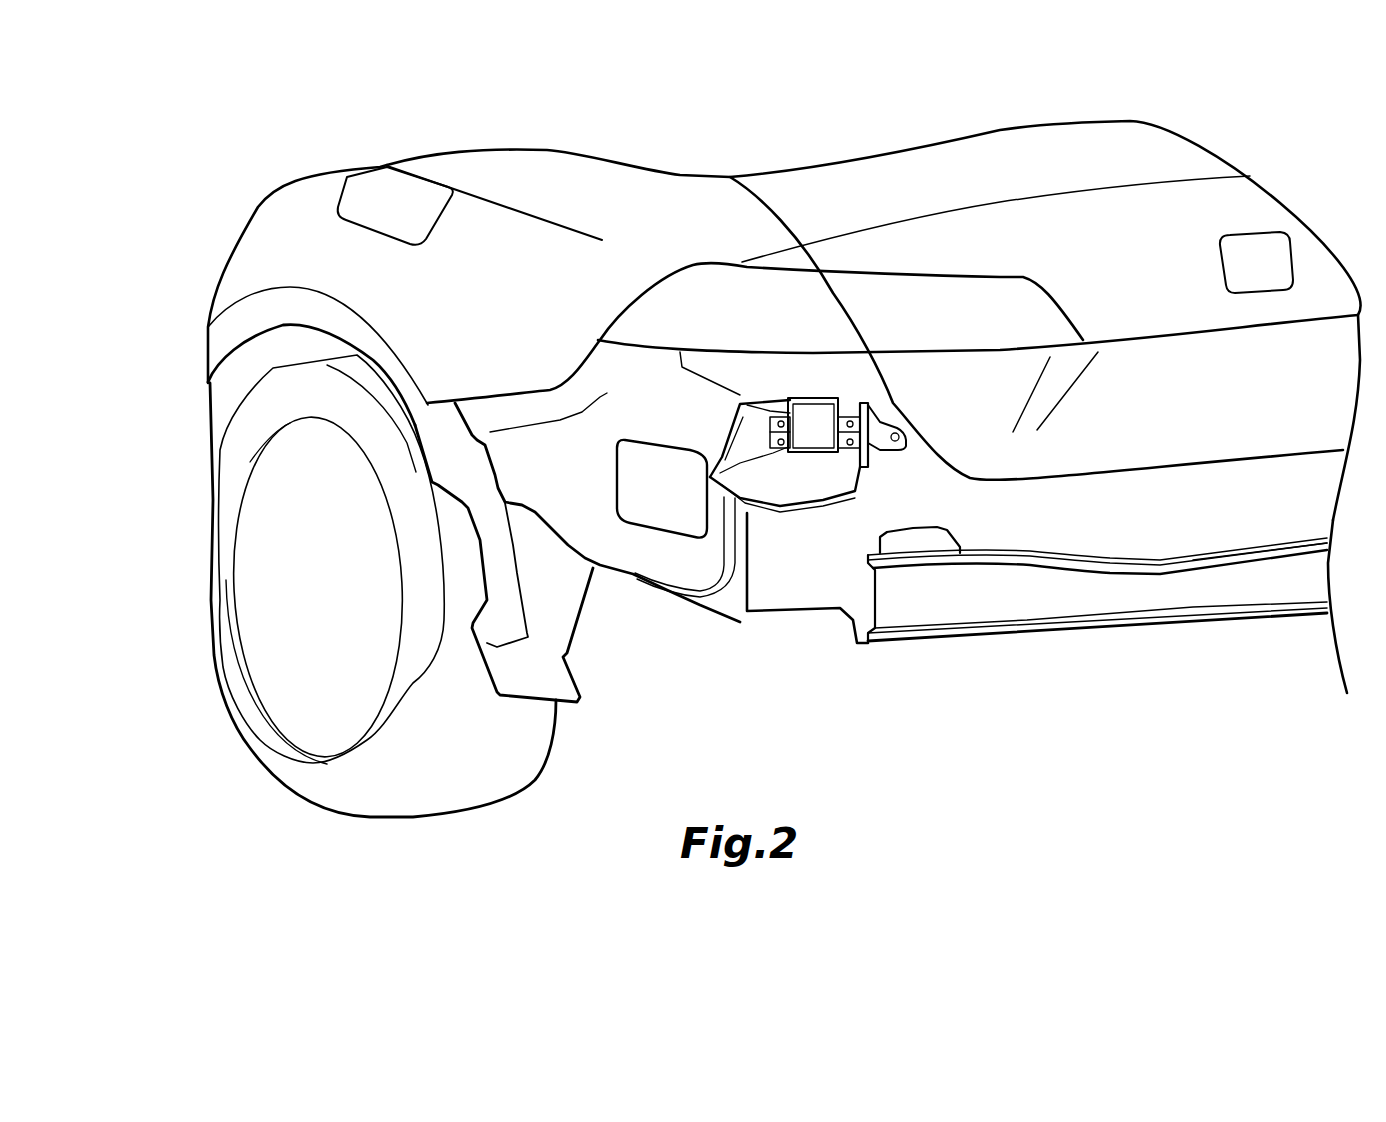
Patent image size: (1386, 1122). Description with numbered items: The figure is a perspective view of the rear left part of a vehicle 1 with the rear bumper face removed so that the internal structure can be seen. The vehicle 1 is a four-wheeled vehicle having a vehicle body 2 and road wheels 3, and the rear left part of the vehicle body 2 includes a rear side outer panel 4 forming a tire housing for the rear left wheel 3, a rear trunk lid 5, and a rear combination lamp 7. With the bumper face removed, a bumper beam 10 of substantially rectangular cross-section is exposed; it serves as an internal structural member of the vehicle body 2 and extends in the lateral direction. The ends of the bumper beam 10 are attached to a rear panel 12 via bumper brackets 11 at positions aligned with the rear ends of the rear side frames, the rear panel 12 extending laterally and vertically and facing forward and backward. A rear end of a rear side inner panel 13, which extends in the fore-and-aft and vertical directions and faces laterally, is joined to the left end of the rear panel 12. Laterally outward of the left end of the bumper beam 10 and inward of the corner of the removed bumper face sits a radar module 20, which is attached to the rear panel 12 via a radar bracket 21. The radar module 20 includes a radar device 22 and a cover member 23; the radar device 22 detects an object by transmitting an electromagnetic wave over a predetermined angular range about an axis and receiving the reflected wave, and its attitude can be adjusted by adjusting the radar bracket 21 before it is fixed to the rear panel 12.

The vehicle 1 is at (822, 141).
The vehicle body 2 is at (258, 218).
The road wheel 3 is at (218, 563).
The rear side outer panel 4 is at (517, 180).
The rear trunk lid 5 is at (1150, 155).
The rear combination lamp 7 is at (713, 310).
The bumper beam 10 is at (1153, 597).
The bumper bracket 11 is at (927, 540).
The rear panel 12 is at (1247, 513).
The rear side inner panel 13 is at (625, 545).
The radar module 20 is at (831, 516).
The radar bracket 21 is at (906, 455).
The radar device 22 is at (817, 423).
The cover member 23 is at (788, 487).